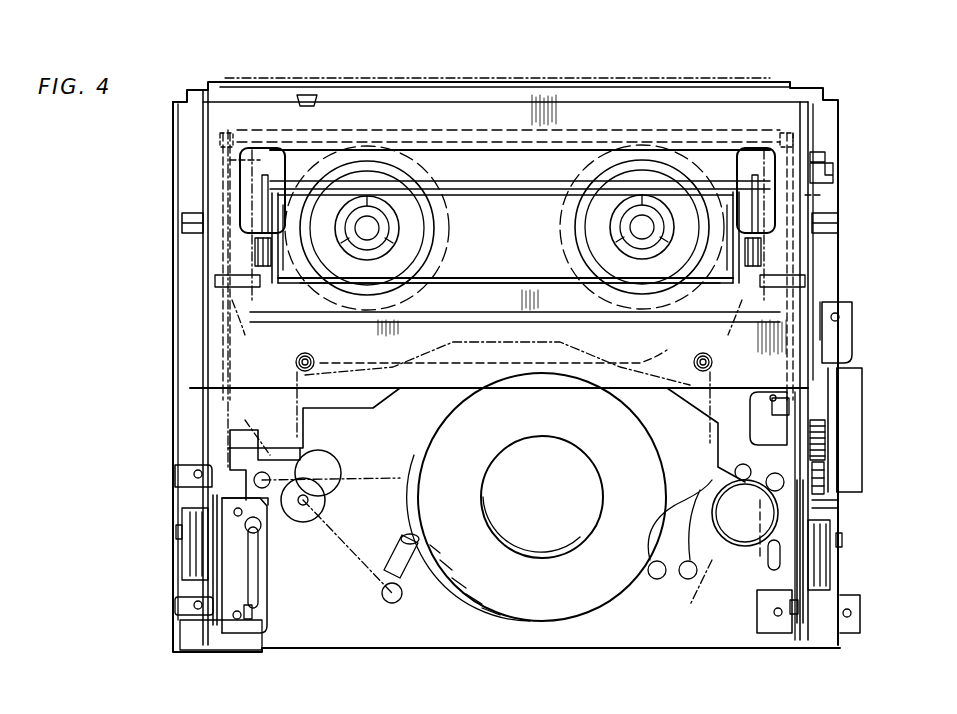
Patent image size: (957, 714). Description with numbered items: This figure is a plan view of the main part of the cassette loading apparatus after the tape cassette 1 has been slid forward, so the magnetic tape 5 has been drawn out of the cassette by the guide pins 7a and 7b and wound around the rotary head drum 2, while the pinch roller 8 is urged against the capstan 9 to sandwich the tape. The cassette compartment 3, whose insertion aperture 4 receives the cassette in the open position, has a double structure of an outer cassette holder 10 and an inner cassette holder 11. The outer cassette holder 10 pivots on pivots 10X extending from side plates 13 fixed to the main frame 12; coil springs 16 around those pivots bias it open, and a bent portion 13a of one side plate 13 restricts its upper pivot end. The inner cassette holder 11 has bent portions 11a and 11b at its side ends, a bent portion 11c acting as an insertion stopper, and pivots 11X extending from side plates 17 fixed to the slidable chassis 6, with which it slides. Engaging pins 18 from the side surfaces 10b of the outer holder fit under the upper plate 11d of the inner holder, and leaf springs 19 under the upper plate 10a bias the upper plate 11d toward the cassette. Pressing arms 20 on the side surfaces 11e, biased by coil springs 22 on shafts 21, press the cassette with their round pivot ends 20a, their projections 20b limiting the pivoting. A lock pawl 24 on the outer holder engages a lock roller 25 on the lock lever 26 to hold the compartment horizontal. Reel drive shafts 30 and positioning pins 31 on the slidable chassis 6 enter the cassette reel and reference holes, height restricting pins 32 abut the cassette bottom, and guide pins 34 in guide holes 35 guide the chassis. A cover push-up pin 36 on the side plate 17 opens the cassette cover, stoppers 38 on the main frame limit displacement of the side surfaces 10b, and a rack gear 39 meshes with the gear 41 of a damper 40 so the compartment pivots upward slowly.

The tape cassette 1 is at (784, 81).
The rotary head drum 2 is at (593, 596).
The cassette compartment 3 is at (164, 383).
The insertion aperture 4 is at (571, 103).
The magnetic tape 5 is at (372, 592).
The slidable chassis 6 is at (366, 395).
The guide pin 7a is at (266, 477).
The guide pin 7b is at (688, 560).
The pinch roller 8 is at (341, 473).
The capstan 9 is at (310, 505).
The outer cassette holder 10 is at (210, 322).
The upper plate of outer cassette holder 10a is at (488, 143).
The side surfaces of outer cassette holder 10b is at (200, 348).
The pivots of outer cassette holder 10X is at (180, 531).
The inner cassette holder 11 is at (604, 303).
The bent portion of inner cassette holder 11a is at (283, 212).
The bent portion of inner cassette holder 11b is at (737, 178).
The bent portion (stopper) 11c is at (268, 455).
The upper plate of inner cassette holder 11d is at (493, 290).
The side surfaces of inner cassette holder 11e is at (222, 166).
The pivots of inner cassette holder 11X is at (246, 618).
The main frame 12 is at (185, 632).
The side plates 13 is at (178, 487).
The bent portion of side plate 13a is at (840, 508).
The coil springs 16 is at (834, 572).
The side plates of slidable chassis 17 is at (245, 565).
The engaging pins 18 is at (218, 138).
The leaf springs 19 is at (280, 175).
The pressing arms 20 is at (238, 252).
The round pivot ends of pressing arms 20a is at (236, 310).
The projections of pressing arms 20b is at (220, 282).
The shafts 21 is at (292, 255).
The coil springs 22 is at (258, 165).
The lock pawl 24 is at (822, 190).
The lock roller 25 is at (826, 156).
The lock lever 26 is at (840, 248).
The reel drive shafts 30 is at (380, 230).
The positioning pins 31 is at (314, 363).
The height restricting pins 32 is at (314, 104).
The guide pins 34 is at (260, 526).
The guide holes 35 is at (258, 585).
The cover push-up pin 36 is at (772, 405).
The stoppers 38 is at (181, 226).
The rack gear 39 is at (826, 474).
The damper 40 is at (858, 450).
The gear of damper 41 is at (826, 436).